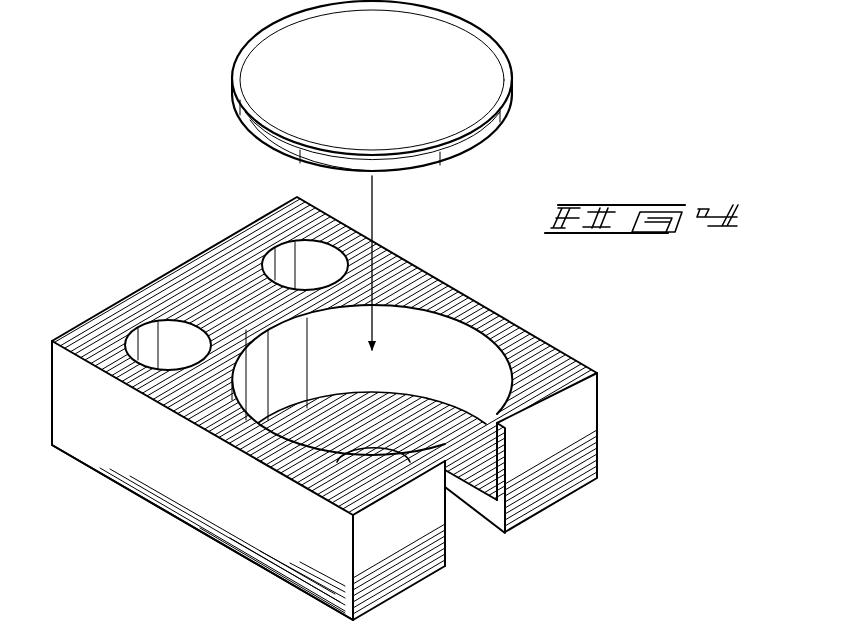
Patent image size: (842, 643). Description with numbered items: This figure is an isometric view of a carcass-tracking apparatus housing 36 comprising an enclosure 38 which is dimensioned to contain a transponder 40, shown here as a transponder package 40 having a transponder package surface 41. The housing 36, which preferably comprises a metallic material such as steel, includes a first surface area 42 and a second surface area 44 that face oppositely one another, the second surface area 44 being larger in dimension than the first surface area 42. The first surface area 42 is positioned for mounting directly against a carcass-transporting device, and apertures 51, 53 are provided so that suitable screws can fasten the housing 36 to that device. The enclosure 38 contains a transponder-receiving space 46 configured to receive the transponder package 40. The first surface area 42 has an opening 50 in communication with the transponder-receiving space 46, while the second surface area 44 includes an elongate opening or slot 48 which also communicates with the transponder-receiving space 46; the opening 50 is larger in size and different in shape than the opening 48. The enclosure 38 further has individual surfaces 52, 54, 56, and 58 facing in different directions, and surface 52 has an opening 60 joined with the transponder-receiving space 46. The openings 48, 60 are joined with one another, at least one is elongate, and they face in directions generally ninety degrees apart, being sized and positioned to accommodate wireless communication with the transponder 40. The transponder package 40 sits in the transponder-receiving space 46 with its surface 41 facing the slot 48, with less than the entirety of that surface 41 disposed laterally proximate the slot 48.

The carcass-tracking apparatus housing 36 is at (68, 205).
The enclosure 38 is at (431, 277).
The transponder 40 is at (450, 45).
The transponder package surface 41 is at (272, 148).
The first surface area 42 is at (528, 357).
The second surface area 44 is at (257, 566).
The transponder-receiving space 46 is at (448, 348).
The opening (slot) 48 is at (483, 523).
The opening 50 is at (283, 327).
The aperture 51 is at (166, 320).
The surface 52 is at (385, 548).
The aperture 53 is at (322, 240).
The surface 54 is at (505, 318).
The surface 56 is at (130, 442).
The surface 58 is at (248, 232).
The opening 60 is at (447, 547).